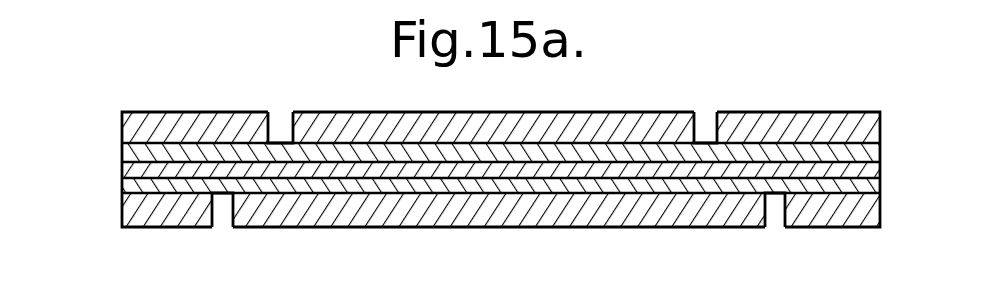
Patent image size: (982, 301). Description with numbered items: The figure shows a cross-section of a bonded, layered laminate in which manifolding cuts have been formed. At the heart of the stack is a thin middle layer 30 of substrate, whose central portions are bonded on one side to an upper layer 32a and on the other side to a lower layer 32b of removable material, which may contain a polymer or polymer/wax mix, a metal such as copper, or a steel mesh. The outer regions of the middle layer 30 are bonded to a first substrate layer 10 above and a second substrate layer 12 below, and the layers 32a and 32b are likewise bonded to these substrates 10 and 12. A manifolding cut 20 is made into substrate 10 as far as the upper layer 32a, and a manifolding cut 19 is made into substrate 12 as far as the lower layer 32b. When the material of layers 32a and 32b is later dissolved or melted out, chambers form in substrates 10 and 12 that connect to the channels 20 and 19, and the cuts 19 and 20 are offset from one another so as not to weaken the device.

The first substrate layer 10 is at (122, 151).
The second substrate layer 12 is at (122, 212).
The manifolding cut 19 is at (777, 235).
The manifolding cut 20 is at (710, 125).
The thin middle layer 30 is at (567, 165).
The upper substrate layer 32a is at (380, 150).
The lower substrate layer 32b is at (402, 180).